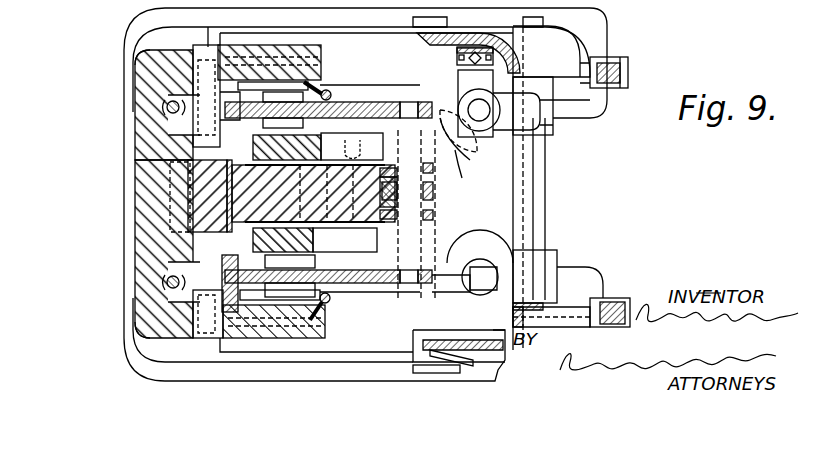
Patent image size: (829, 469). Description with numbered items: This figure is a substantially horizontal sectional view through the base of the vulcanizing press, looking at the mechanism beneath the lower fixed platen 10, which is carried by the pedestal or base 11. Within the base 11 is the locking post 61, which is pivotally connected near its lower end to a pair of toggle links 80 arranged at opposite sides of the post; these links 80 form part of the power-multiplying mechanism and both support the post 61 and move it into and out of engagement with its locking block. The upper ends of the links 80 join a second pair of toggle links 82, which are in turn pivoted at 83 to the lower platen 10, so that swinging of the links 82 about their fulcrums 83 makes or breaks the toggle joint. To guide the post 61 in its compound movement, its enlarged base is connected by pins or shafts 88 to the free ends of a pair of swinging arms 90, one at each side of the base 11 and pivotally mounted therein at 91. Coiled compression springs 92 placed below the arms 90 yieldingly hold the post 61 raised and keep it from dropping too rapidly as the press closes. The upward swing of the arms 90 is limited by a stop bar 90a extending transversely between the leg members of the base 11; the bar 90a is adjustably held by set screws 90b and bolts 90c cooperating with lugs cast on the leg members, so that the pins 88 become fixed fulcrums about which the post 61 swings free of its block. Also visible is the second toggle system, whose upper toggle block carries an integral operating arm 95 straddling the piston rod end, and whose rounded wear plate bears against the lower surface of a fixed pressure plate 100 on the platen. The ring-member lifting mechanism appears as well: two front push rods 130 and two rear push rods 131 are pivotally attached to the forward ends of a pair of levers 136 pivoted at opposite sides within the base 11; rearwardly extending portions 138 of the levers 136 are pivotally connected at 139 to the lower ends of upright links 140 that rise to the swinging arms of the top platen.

The lower fixed platen 10 is at (150, 150).
The pedestal or base 11 is at (165, 20).
The locking post 61 is at (348, 192).
The toggle links 80 is at (260, 135).
The toggle links 82 is at (240, 108).
The pivot 83 is at (150, 52).
The pins or shafts 88 is at (366, 99).
The swinging arms 90 is at (460, 170).
The stop bar 90a is at (466, 185).
The set screws 90b is at (494, 58).
The bolts 90c is at (476, 52).
The pivot 91 is at (535, 182).
The coiled compression springs 92 is at (485, 128).
The operating arm 95 is at (314, 193).
The fixed pressure plate 100 is at (205, 190).
The push rods 130 is at (165, 105).
The push rods 131 is at (334, 88).
The levers 136 is at (346, 90).
The rearwardly extending portions 138 is at (627, 87).
The pivotal connection 139 is at (635, 54).
The upright links 140 is at (628, 71).